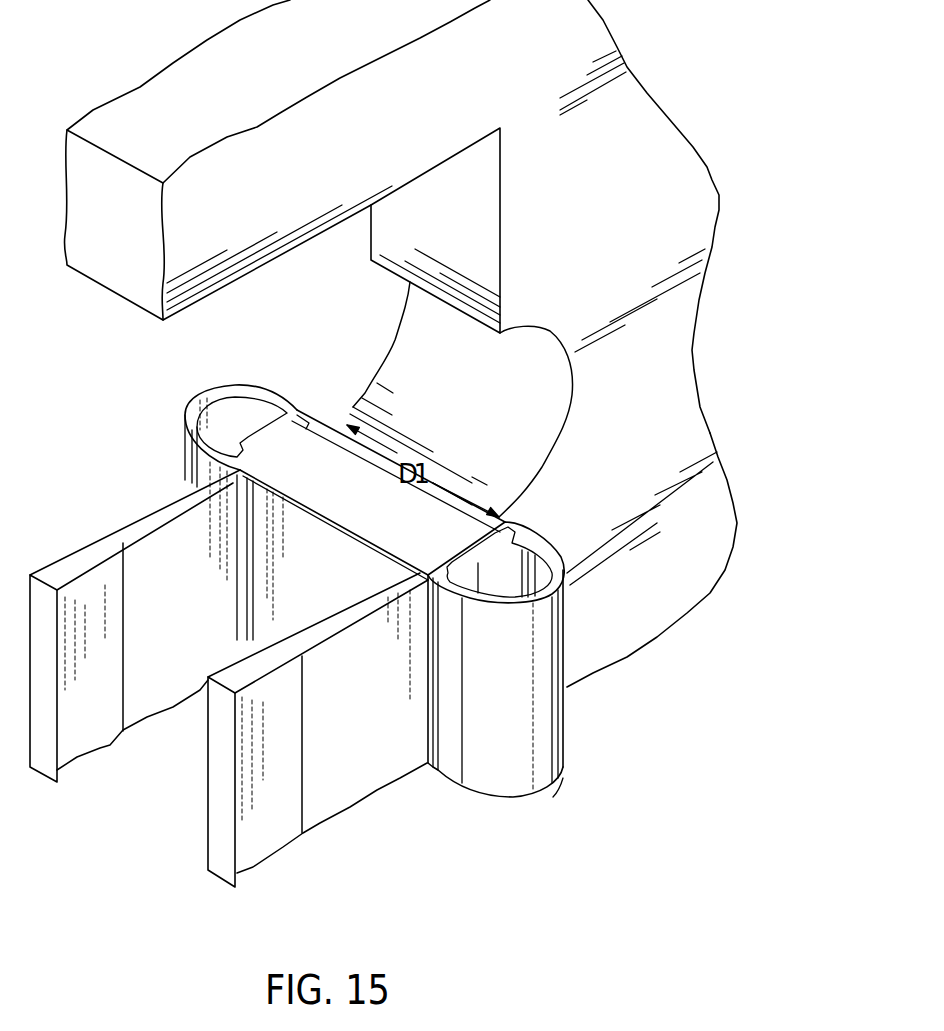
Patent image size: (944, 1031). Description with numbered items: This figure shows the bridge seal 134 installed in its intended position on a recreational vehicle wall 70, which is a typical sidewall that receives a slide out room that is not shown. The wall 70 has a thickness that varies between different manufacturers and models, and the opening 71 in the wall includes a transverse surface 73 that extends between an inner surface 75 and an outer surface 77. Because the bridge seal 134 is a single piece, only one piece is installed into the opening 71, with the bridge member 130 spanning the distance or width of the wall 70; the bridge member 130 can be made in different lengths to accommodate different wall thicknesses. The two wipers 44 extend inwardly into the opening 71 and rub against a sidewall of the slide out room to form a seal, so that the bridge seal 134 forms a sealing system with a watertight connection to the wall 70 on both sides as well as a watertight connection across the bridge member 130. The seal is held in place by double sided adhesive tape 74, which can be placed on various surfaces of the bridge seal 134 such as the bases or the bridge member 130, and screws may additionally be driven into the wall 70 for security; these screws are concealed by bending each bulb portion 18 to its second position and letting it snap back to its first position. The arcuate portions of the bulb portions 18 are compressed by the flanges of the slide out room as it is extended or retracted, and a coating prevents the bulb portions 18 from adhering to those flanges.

The opening 71 is at (293, 307).
The inner surface 75 is at (370, 252).
The outer surface 77 is at (589, 257).
The wall 70 is at (636, 609).
The opening 73 is at (478, 322).
The adhesive tape 74 is at (297, 445).
The wipers 44 is at (137, 512).
The bridge member 130 is at (275, 577).
The bulb portion 18 is at (497, 778).
The bridge seal 134 is at (553, 797).